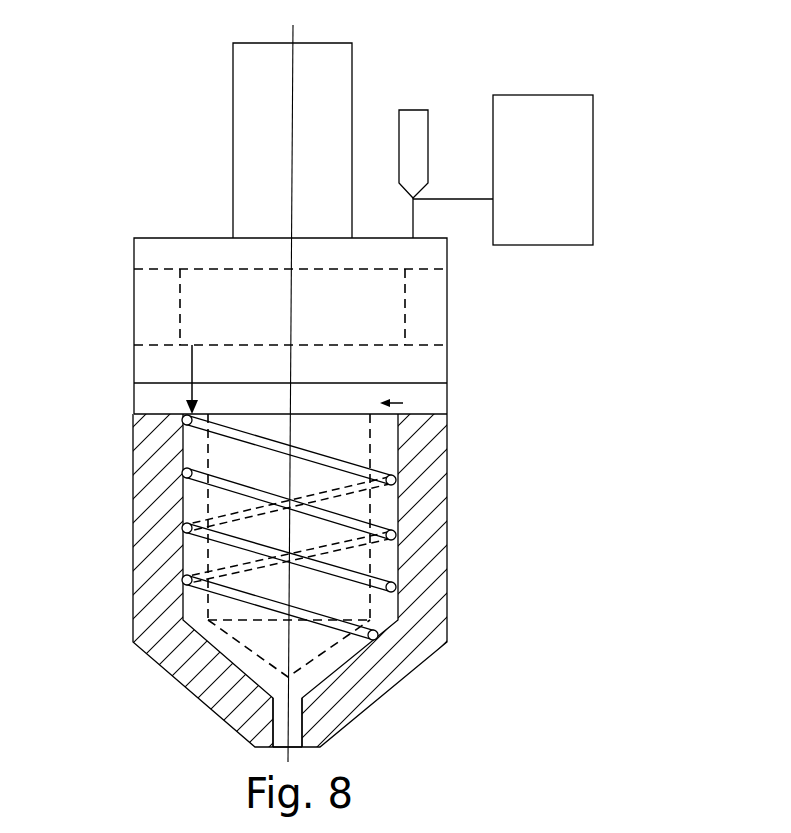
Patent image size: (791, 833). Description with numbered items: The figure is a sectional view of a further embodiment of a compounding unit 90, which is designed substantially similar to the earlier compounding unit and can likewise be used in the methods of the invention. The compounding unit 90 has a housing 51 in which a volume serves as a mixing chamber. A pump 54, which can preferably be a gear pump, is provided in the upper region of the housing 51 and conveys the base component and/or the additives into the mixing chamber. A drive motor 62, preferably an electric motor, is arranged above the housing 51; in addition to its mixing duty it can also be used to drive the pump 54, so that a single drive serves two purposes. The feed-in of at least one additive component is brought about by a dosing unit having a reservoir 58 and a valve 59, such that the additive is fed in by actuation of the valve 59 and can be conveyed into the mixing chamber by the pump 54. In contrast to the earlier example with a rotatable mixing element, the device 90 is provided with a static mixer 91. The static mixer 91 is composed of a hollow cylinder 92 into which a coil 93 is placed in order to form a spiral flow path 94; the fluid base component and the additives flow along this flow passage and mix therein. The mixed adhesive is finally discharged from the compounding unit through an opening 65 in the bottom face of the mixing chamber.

The compounding unit 90 is at (166, 96).
The drive motor 62 is at (352, 67).
The valve 59 is at (428, 130).
The reservoir 58 is at (572, 126).
The pump 54 is at (432, 315).
The housing 51 is at (430, 482).
The static mixer 91 is at (394, 530).
The hollow cylinder 92 is at (392, 613).
The coil 93 is at (182, 527).
The spiral flow path 94 is at (186, 560).
The opening 65 is at (302, 721).